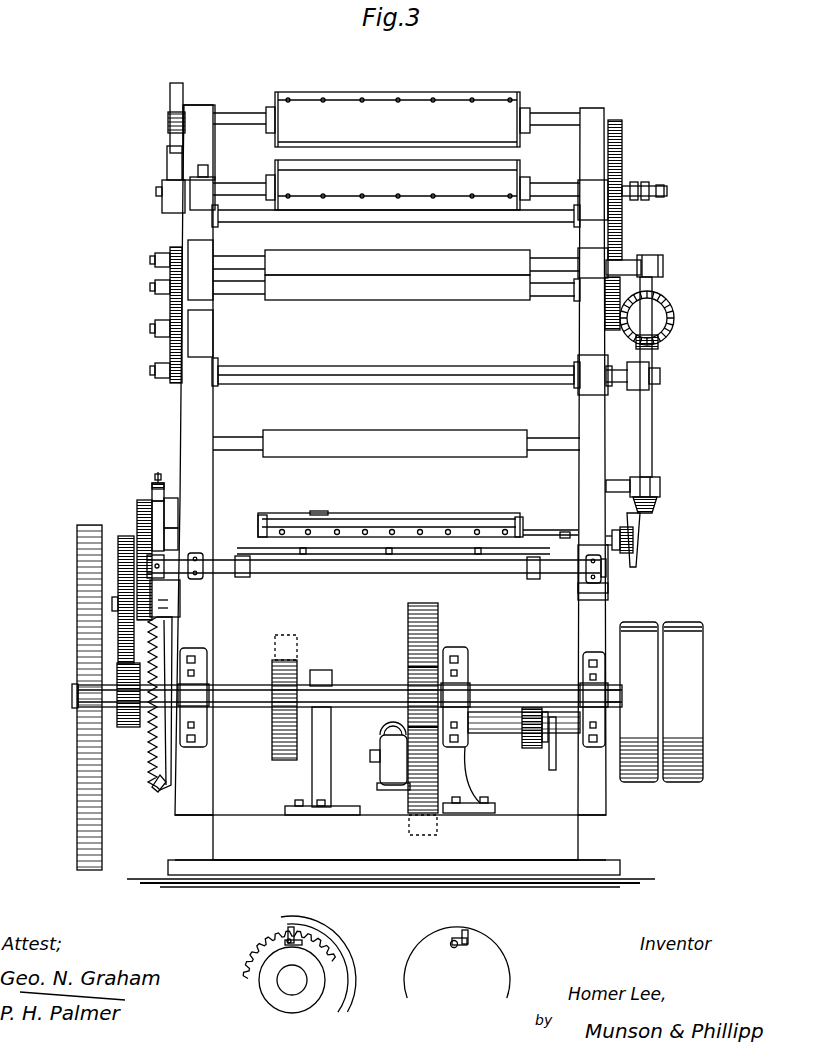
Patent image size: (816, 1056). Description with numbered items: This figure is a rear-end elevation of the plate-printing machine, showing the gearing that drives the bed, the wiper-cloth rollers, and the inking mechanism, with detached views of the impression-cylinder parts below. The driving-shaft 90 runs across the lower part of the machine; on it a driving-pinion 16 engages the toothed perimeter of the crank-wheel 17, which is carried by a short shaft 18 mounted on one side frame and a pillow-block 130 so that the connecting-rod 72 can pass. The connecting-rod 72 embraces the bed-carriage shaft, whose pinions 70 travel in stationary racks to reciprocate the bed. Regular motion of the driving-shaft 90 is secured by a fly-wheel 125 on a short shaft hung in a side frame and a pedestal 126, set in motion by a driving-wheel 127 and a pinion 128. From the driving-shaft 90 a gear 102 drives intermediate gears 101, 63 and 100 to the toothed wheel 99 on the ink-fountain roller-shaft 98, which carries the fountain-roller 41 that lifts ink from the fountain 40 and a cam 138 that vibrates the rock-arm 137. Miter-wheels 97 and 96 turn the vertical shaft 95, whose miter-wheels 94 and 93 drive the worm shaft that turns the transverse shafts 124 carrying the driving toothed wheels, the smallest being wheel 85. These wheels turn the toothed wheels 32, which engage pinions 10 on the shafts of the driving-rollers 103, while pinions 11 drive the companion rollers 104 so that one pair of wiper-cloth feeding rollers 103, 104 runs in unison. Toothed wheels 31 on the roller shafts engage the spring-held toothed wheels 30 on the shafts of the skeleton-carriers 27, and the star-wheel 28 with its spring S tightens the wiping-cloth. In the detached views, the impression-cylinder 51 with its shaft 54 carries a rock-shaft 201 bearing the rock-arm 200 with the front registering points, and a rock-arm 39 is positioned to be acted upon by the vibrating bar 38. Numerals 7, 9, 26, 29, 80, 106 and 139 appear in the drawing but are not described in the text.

The clutch lever 7 is at (551, 770).
The clutch gear 9 is at (557, 742).
The pinion 10 is at (160, 279).
The pinion 11 is at (170, 250).
The driving-pinion 16 is at (408, 680).
The crank-wheel 17 is at (438, 615).
The short shaft 18 is at (497, 737).
The upper roller 26 is at (396, 119).
The skeleton-carrier 27 is at (396, 185).
The wheel 28 is at (170, 100).
The adjusting rod 29 is at (167, 166).
The toothed wheel 30 is at (622, 148).
The toothed wheel 31 is at (612, 331).
The toothed wheel 32 is at (164, 350).
The bar 38 is at (358, 957).
The rock-arm 39 is at (286, 940).
The ink fountain 40 is at (389, 524).
The fountain-roller 41 is at (524, 528).
The impression-cylinder 51 is at (457, 962).
The shaft of impression-cylinder 54 is at (289, 972).
The intermediate gear 63 is at (153, 703).
The pinion 70 is at (170, 196).
The connecting-rod 72 is at (380, 736).
The shaft end 80 is at (72, 694).
The driving toothed wheel 85 is at (166, 380).
The driving-shaft 90 is at (350, 696).
The miter-wheel 93 is at (675, 318).
The miter-wheel 94 is at (659, 344).
The shaft 95 is at (652, 428).
The miter-wheel 96 is at (655, 516).
The miter-wheel 97 is at (638, 555).
The ink-fountain roller-shaft 98 is at (407, 536).
The toothed wheel 99 is at (137, 502).
The intermediate gear 100 is at (155, 578).
The intermediate gear 101 is at (125, 537).
The intermediate gear 102 is at (124, 701).
The driving-roller 103 is at (396, 288).
The wiper-cloth feeding roller 104 is at (396, 262).
The bevel gear teeth 106 is at (156, 778).
The transverse shaft 124 is at (420, 373).
The fly-wheel 125 is at (77, 755).
The pedestal 126 is at (321, 757).
The driving-wheel 127 is at (272, 748).
The pinion 128 is at (322, 669).
The pillow-block 130 is at (467, 766).
The rock-arm 137 is at (158, 534).
The cam 138 is at (178, 513).
The shaft 139 is at (646, 185).
The rock-arm 200 is at (467, 945).
The rock-shaft 201 is at (442, 950).
The spring S is at (202, 164).